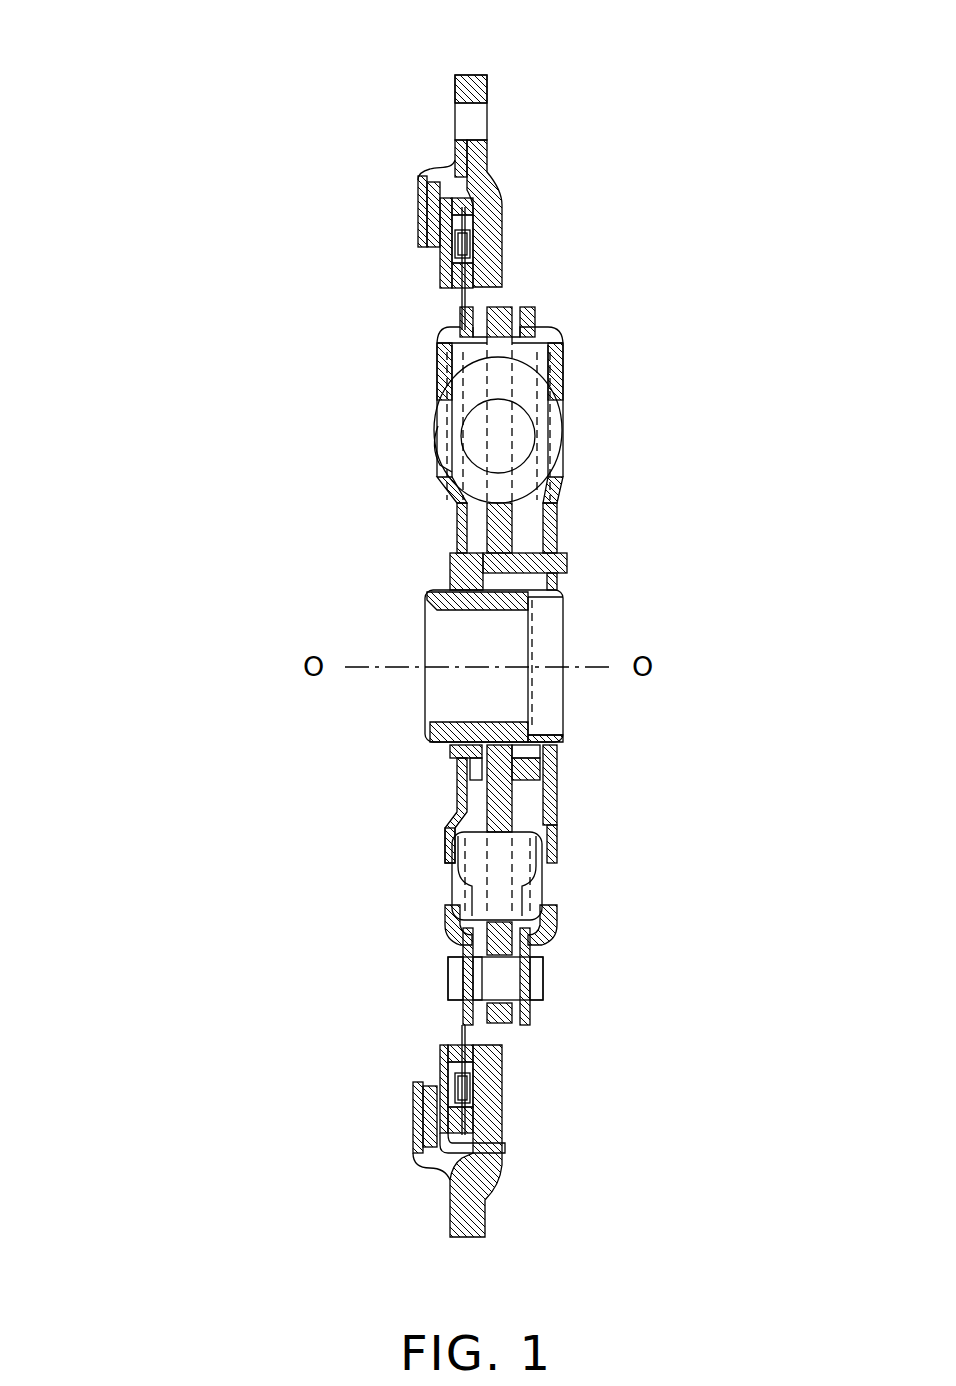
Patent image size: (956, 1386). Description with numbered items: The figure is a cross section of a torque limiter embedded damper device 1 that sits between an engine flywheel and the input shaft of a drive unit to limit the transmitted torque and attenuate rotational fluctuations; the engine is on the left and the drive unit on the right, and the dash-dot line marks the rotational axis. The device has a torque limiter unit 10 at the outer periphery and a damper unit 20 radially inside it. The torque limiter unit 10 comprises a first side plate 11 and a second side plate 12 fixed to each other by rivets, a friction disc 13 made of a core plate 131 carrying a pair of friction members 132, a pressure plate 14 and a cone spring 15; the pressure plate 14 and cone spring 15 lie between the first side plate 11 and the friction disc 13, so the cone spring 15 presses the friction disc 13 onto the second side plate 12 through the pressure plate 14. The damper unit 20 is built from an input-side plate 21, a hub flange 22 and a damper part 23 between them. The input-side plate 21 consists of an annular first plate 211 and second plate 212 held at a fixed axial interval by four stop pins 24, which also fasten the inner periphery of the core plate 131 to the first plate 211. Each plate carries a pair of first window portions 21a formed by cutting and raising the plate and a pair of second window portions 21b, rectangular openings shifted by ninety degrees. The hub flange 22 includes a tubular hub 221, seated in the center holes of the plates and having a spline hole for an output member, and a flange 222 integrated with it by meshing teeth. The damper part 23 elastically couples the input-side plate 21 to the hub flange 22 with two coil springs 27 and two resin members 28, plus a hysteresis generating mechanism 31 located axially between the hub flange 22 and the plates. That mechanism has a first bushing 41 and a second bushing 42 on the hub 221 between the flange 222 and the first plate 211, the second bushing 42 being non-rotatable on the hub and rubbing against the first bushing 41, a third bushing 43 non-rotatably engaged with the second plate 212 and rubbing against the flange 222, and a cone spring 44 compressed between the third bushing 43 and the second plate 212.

The torque limiter embedded damper device 1 is at (230, 203).
The torque limiter unit 10 is at (505, 82).
The first side plate 11 is at (418, 222).
The second side plate 12 is at (502, 183).
The friction disc 13 is at (470, 208).
The pressure plate 14 is at (442, 280).
The cone spring 15 is at (412, 237).
The damper unit 20 is at (607, 365).
The input-side plate 21 is at (570, 322).
The first window portion 21a is at (438, 377).
The second window portion 21b is at (445, 862).
The hub flange 22 is at (413, 590).
The hub 221 is at (563, 604).
The flange 222 is at (512, 520).
The damper part 23 is at (572, 442).
The coil spring 27 is at (445, 448).
The resin member 28 is at (455, 883).
The first plate 211 is at (450, 922).
The second plate 212 is at (557, 925).
The stop pin 24 is at (545, 985).
The hysteresis generating mechanism 31 is at (440, 772).
The first bushing 41 is at (445, 776).
The second bushing 42 is at (540, 702).
The third bushing 43 is at (557, 784).
The cone spring 44 is at (557, 790).
The core plate 131 is at (455, 1018).
The friction member 132 is at (413, 1100).